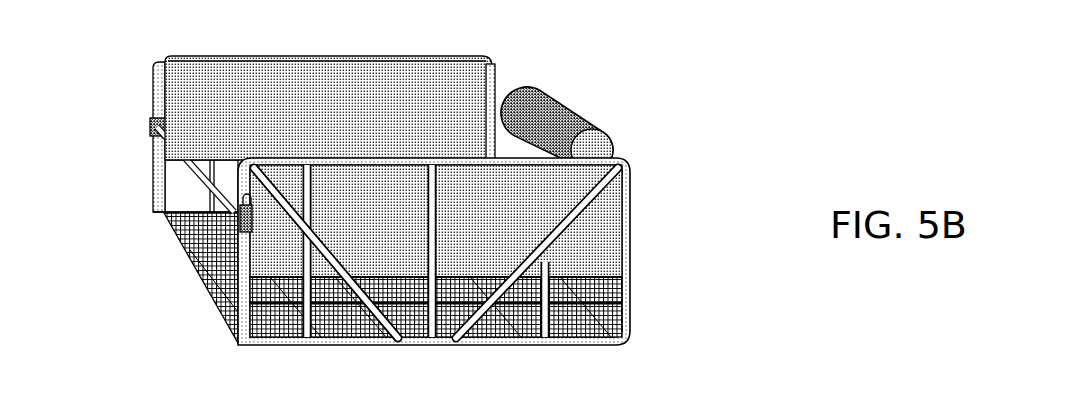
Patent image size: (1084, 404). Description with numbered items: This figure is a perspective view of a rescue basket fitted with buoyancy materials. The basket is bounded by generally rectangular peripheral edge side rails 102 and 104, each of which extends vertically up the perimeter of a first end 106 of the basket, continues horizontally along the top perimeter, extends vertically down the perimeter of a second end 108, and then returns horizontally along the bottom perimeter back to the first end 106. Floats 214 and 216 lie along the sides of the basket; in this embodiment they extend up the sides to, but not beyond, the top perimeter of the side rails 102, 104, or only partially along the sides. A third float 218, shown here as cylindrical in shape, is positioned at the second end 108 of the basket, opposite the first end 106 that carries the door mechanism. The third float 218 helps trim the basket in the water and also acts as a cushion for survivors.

The side rail 102 is at (440, 94).
The float 214 is at (417, 98).
The third float 218 is at (565, 115).
The side rail 104 is at (501, 247).
The float 216 is at (590, 238).
The second end 108 is at (645, 318).
The first end 106 is at (204, 317).